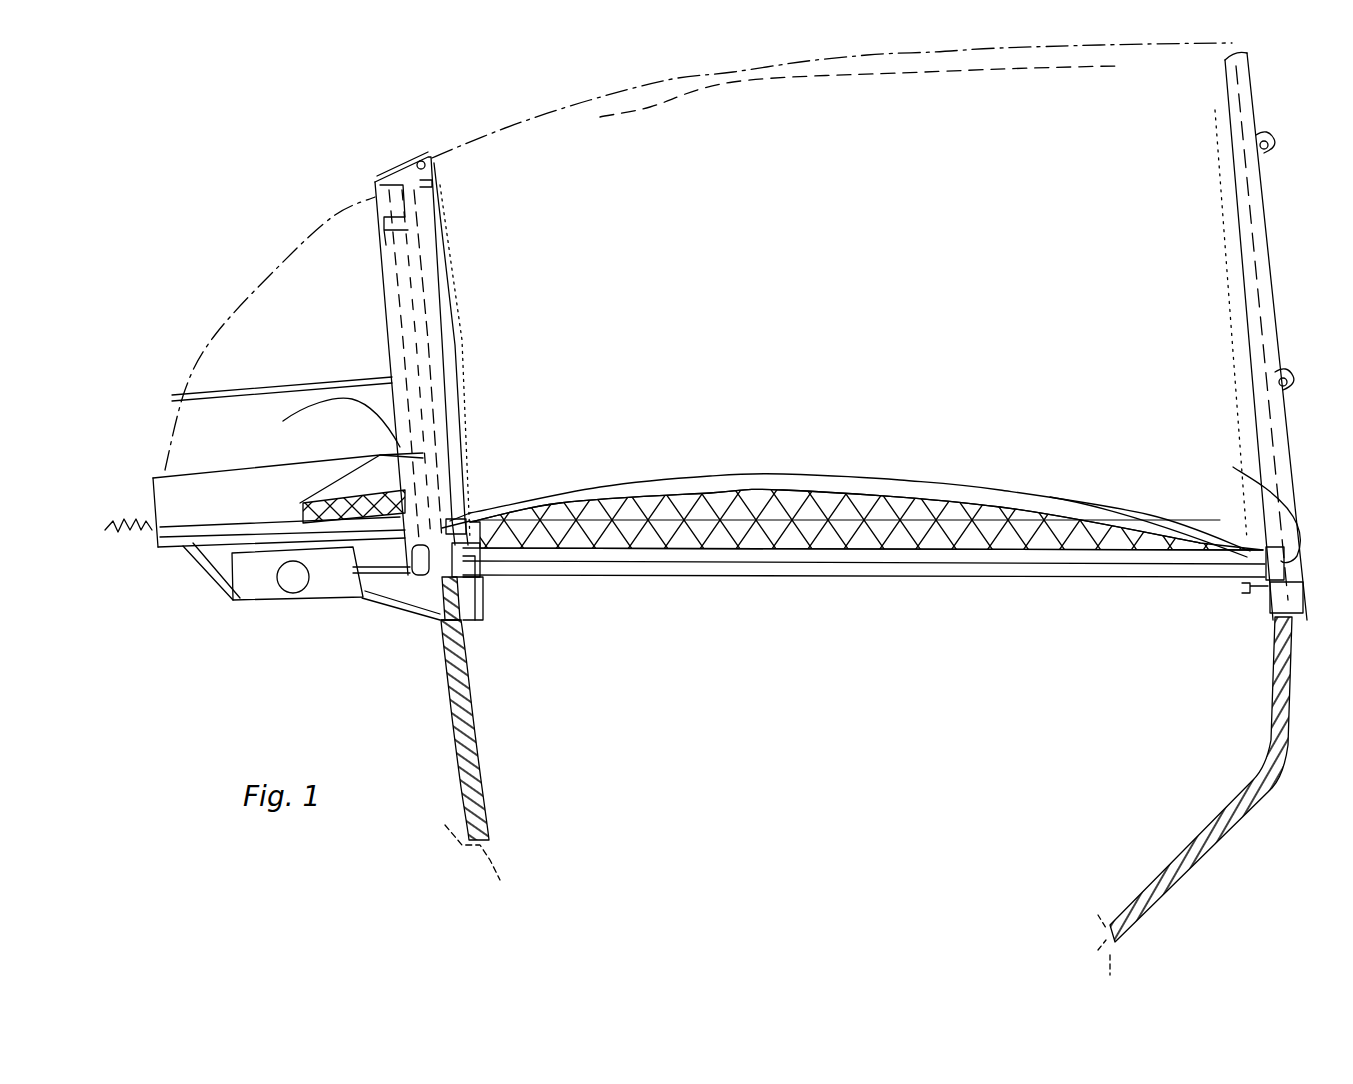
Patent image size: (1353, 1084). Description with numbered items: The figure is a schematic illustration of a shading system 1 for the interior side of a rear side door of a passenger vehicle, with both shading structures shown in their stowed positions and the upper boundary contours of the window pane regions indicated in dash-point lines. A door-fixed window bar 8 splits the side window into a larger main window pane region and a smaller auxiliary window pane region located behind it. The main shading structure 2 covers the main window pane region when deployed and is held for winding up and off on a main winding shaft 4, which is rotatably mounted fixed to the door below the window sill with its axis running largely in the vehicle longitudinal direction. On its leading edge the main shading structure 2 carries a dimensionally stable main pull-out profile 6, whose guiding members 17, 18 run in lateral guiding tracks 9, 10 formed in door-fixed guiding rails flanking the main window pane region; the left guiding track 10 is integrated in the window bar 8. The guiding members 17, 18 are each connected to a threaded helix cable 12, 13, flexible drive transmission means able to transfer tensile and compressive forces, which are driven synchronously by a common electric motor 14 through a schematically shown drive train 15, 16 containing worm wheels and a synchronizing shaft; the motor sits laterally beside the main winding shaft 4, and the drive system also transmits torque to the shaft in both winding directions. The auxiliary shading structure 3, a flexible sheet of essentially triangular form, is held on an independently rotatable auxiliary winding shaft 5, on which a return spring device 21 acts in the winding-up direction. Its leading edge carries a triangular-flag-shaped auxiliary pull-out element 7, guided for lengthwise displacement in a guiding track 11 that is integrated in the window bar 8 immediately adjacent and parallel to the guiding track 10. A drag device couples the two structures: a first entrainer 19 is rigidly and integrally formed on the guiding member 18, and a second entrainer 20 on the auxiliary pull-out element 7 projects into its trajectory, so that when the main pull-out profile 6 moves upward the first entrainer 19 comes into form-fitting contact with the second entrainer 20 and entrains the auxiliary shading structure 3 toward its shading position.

The shading system 1 is at (258, 232).
The main shading structure 2 is at (870, 532).
The auxiliary shading structure 3 is at (312, 500).
The main winding shaft 4 is at (630, 542).
The auxiliary winding shaft 5 is at (182, 543).
The main pull-out profile 6 is at (788, 480).
The auxiliary pull-out element 7 is at (363, 473).
The window bar 8 is at (445, 301).
The lateral guiding track 9 is at (1247, 250).
The lateral guiding track 10 is at (434, 412).
The guiding track 11 is at (420, 360).
The threaded helix cable 12 is at (470, 707).
The threaded helix cable 13 is at (1275, 718).
The electric motor 14 is at (323, 597).
The drive train 15 is at (380, 565).
The drive train 16 is at (735, 562).
The guiding member 17 is at (1249, 517).
The guiding member 18 is at (456, 520).
The first entrainer 19 is at (417, 562).
The second entrainer 20 is at (286, 412).
The return spring device 21 is at (128, 522).